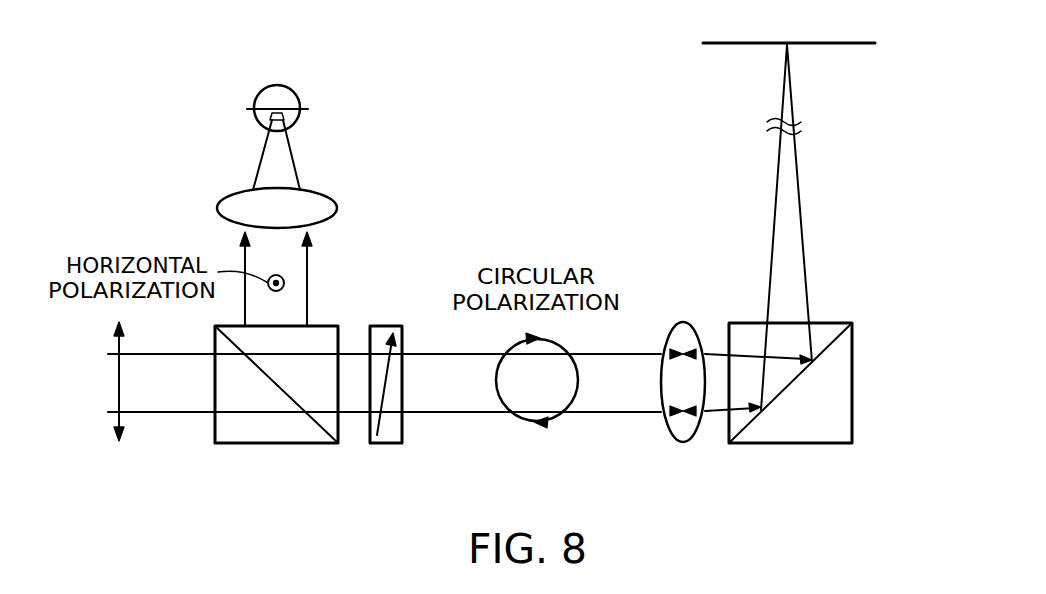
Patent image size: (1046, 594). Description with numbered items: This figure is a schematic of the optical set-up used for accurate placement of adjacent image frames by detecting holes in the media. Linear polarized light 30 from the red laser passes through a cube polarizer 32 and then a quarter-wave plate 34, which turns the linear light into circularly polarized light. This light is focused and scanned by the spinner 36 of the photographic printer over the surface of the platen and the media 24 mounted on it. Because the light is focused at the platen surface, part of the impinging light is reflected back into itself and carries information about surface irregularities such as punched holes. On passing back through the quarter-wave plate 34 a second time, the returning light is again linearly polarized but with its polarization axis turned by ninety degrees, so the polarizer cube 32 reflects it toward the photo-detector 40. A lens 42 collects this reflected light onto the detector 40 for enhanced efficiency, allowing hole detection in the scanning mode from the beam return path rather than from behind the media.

The media 24 is at (837, 44).
The linear polarized light 30 is at (197, 416).
The cube polarizer 32 is at (215, 331).
The λ/4 plate 34 is at (398, 445).
The spinner 36 is at (852, 329).
The photo-detector 40 is at (257, 99).
The lens 42 is at (238, 198).